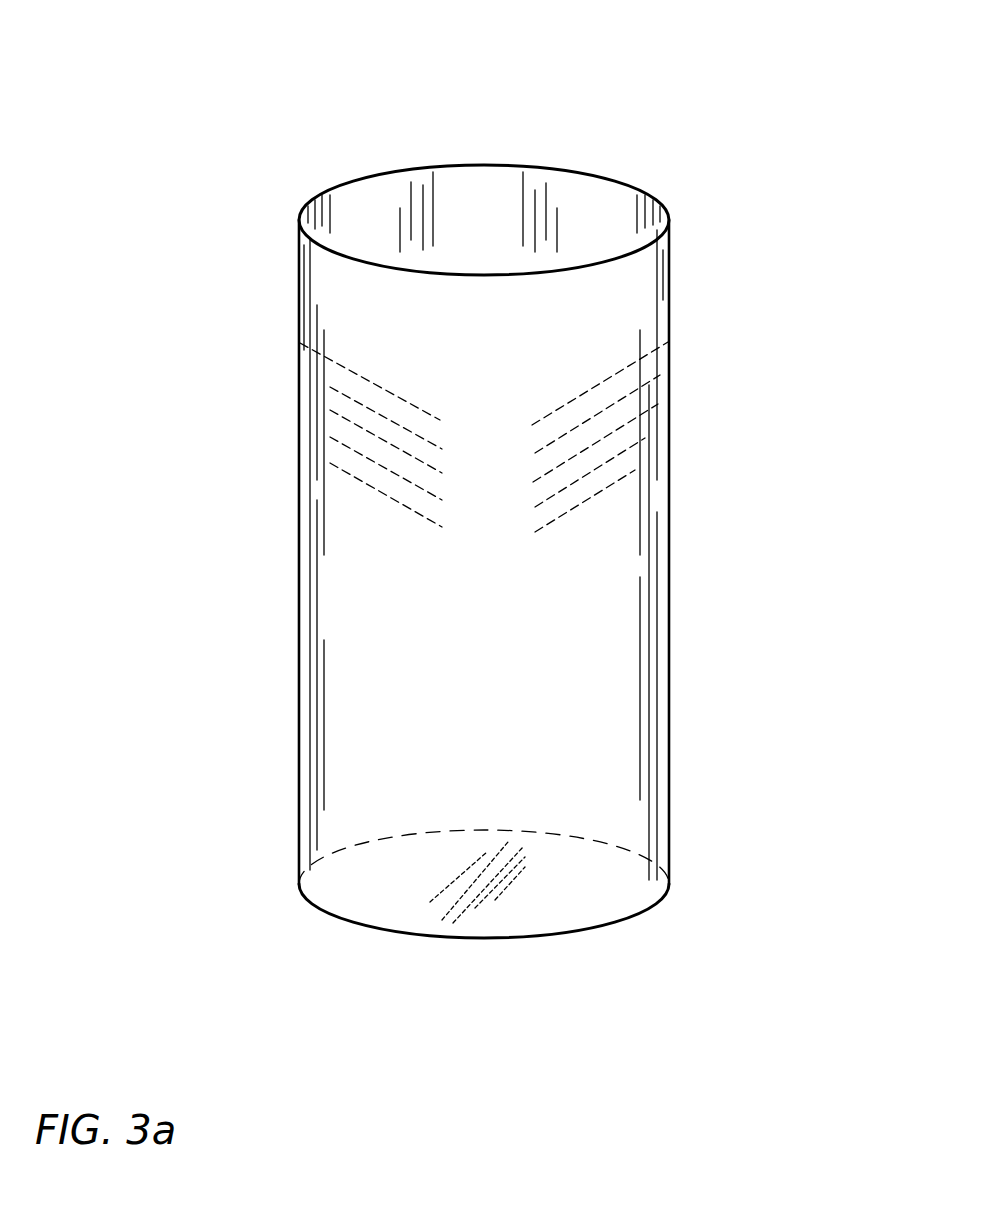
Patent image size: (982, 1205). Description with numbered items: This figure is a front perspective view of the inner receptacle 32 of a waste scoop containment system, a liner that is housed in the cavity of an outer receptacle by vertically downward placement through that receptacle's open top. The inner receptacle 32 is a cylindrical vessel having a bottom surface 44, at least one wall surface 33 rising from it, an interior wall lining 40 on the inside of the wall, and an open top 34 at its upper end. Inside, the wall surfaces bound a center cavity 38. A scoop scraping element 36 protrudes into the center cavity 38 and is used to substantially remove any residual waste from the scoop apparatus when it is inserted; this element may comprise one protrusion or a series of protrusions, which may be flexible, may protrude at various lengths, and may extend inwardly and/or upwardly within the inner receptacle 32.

The inner receptacle 32 is at (237, 45).
The wall surface 33 is at (324, 664).
The open top 34 is at (368, 200).
The scoop scraping element 36 is at (380, 388).
The center cavity 38 is at (547, 590).
The interior wall lining 40 is at (668, 742).
The bottom surface 44 is at (325, 880).